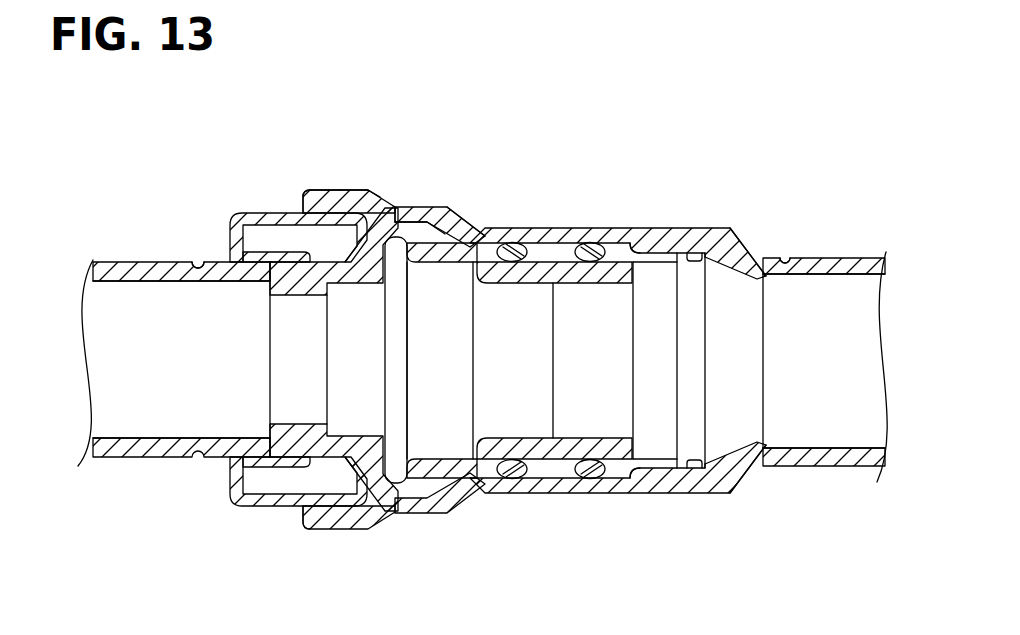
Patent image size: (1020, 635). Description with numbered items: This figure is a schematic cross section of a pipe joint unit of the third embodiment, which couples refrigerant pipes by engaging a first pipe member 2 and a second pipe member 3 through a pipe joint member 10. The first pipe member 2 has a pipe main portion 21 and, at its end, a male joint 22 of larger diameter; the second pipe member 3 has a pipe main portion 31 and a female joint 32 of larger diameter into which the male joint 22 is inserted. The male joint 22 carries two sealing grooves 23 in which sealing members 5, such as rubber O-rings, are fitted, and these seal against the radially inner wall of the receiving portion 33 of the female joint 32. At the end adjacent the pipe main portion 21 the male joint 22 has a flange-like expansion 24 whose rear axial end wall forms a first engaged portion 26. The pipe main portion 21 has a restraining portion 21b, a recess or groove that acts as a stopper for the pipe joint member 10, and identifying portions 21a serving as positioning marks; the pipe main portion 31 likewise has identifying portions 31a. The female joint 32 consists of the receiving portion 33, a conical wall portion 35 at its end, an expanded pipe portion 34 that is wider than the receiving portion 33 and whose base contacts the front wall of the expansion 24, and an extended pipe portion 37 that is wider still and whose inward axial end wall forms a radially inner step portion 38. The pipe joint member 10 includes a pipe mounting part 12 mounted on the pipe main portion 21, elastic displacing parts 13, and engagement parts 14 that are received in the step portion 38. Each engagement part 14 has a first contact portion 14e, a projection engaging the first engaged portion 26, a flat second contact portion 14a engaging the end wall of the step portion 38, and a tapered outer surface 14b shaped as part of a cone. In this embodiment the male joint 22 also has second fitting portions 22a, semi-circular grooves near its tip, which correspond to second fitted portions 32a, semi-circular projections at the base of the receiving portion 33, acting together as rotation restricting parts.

The first pipe member 2 is at (100, 257).
The second pipe member 3 is at (815, 254).
The sealing member 5 is at (591, 480).
The pipe joint member 10 is at (222, 217).
The pipe mounting part 12 is at (242, 214).
The elastic displacing part 13 is at (296, 214).
The engagement part 14 is at (338, 211).
The second contact portion 14a is at (304, 206).
The tapered outer surface 14b is at (365, 528).
The first contact portion 14e is at (397, 512).
The pipe main portion 21 is at (130, 262).
The identifying portion 21a is at (195, 264).
The restraining portion 21b is at (232, 506).
The male joint 22 is at (630, 489).
The second fitting portion 22a is at (688, 252).
The sealing groove 23 is at (530, 480).
The expansion 24 is at (432, 206).
The first engaged portion 26 is at (364, 204).
The pipe main portion 31 is at (852, 257).
The identifying portion 31a is at (786, 259).
The female joint 32 is at (558, 226).
The second fitted portion 32a is at (646, 241).
The receiving portion 33 is at (704, 228).
The expanded pipe portion 34 is at (394, 207).
The conical wall portion 35 is at (471, 228).
The extended pipe portion 37 is at (306, 191).
The radially inner step portion 38 is at (351, 191).